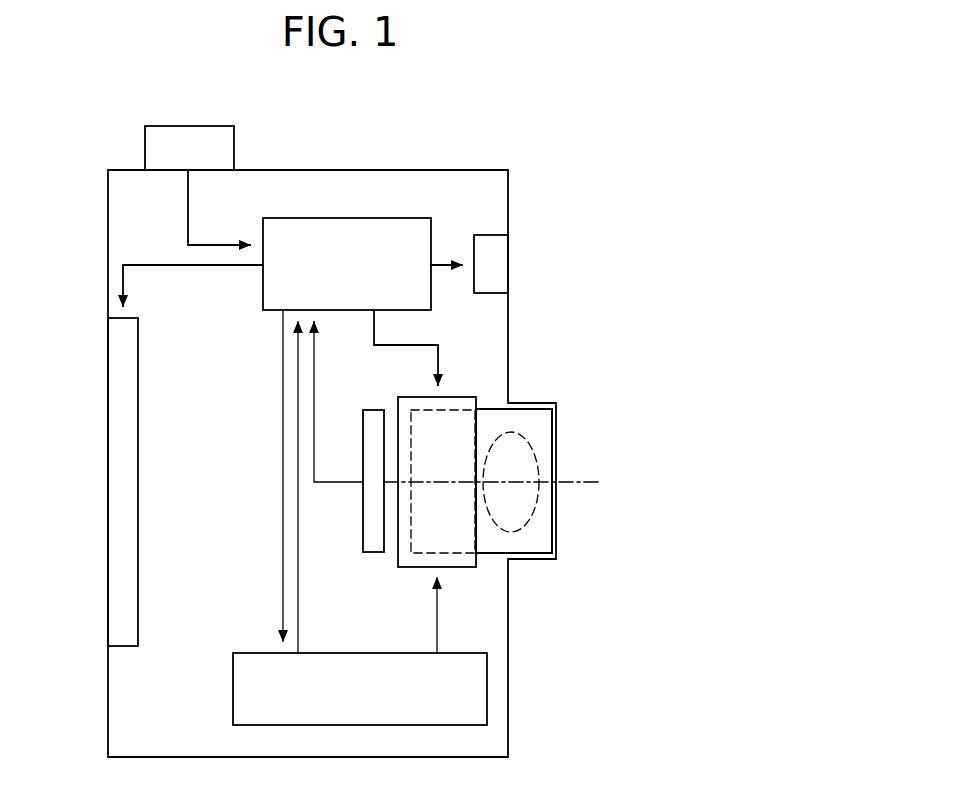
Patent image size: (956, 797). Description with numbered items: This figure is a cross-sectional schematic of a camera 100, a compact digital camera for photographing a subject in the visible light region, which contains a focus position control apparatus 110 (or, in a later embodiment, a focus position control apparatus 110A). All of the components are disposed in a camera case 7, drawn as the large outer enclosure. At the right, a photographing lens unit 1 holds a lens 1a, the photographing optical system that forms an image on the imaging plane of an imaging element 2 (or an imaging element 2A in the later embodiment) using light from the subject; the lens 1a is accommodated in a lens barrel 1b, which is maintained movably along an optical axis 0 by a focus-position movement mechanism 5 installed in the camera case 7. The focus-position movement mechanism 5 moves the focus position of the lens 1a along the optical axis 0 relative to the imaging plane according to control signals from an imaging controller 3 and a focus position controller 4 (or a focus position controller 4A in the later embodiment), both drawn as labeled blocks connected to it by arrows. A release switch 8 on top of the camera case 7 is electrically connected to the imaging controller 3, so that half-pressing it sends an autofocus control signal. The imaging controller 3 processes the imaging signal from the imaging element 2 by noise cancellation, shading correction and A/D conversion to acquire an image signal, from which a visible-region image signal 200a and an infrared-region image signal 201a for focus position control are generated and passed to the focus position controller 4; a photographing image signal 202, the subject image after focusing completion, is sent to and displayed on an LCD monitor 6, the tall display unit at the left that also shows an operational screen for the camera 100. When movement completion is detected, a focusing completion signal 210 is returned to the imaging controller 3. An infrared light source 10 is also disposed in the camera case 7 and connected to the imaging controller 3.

The camera 100 is at (549, 113).
The focus position control apparatus 110 is at (522, 440).
The focus position control apparatus 110A is at (400, 443).
The camera case 7 is at (362, 170).
The release switch 8 is at (200, 126).
The imaging controller 3 is at (360, 218).
The infrared light source 10 is at (508, 262).
The LCD monitor 6 is at (107, 585).
The focus position controller 4 is at (345, 649).
The focus position controller 4A is at (253, 652).
The photographing image signal 202 is at (152, 262).
The visible-region image signal 200a is at (232, 481).
The infrared-region image signal 201a is at (280, 445).
The focusing completion signal 210 is at (298, 604).
The imaging element 2 is at (363, 455).
The imaging element 2A is at (363, 448).
The focus-position movement mechanism 5 is at (460, 396).
The optical axis 0 is at (583, 480).
The photographing lens unit 1 is at (576, 482).
The lens 1a is at (540, 500).
The lens barrel 1b is at (542, 538).